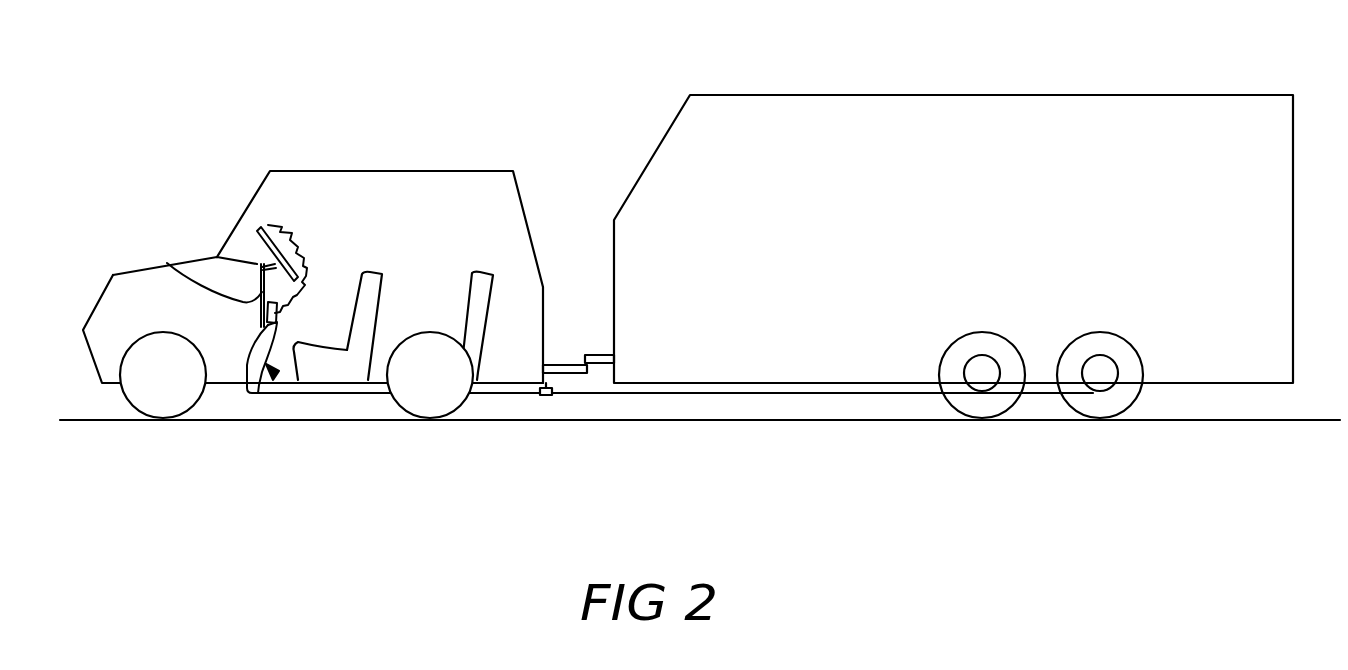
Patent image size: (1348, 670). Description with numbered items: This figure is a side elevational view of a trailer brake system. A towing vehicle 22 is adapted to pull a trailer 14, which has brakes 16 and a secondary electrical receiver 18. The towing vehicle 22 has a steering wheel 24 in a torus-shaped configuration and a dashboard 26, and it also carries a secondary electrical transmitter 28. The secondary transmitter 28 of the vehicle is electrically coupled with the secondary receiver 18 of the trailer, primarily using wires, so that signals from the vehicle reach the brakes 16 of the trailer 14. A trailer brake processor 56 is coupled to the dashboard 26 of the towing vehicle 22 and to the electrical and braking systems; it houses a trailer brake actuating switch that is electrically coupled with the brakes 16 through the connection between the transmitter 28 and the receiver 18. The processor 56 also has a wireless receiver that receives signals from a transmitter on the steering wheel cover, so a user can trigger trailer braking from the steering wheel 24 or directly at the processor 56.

The trailer 14 is at (912, 97).
The brakes 16 is at (1100, 377).
The secondary electrical receiver 18 is at (1093, 487).
The towing vehicle 22 is at (360, 171).
The steering wheel 24 is at (257, 227).
The dashboard 26 is at (225, 296).
The secondary electrical transmitter 28 is at (253, 352).
The trailer brake processor 56 is at (258, 393).